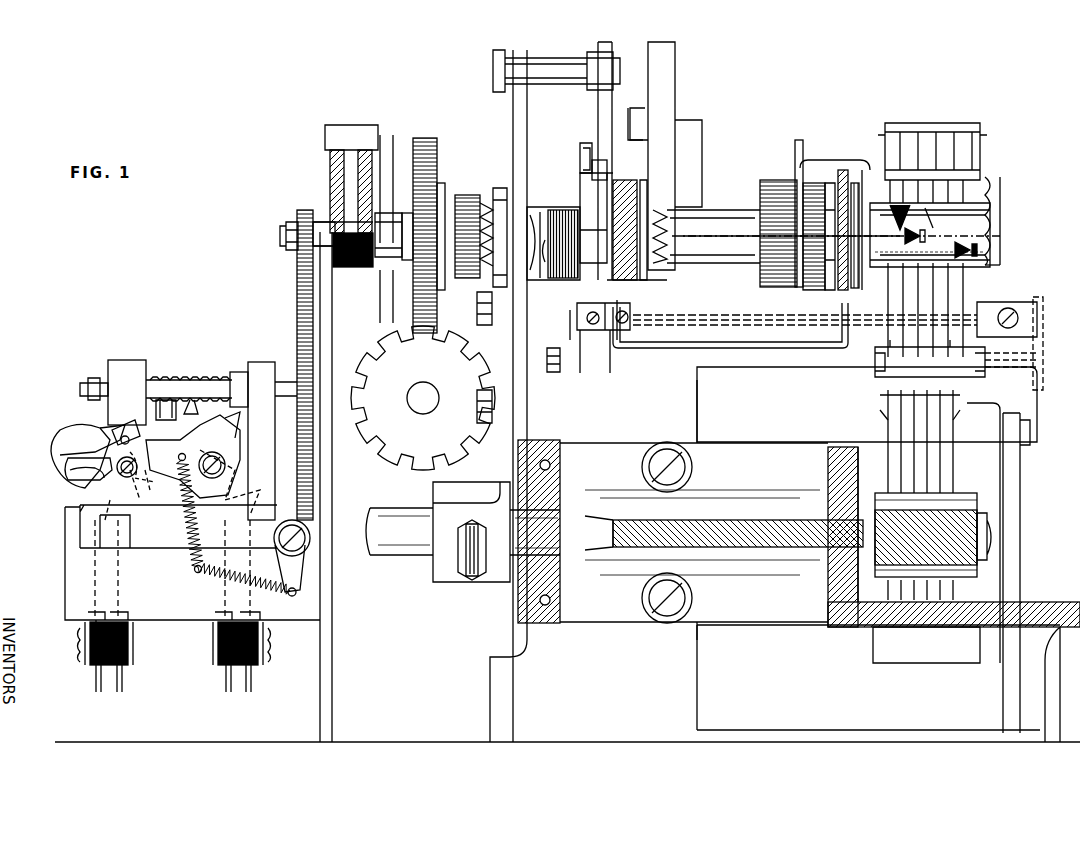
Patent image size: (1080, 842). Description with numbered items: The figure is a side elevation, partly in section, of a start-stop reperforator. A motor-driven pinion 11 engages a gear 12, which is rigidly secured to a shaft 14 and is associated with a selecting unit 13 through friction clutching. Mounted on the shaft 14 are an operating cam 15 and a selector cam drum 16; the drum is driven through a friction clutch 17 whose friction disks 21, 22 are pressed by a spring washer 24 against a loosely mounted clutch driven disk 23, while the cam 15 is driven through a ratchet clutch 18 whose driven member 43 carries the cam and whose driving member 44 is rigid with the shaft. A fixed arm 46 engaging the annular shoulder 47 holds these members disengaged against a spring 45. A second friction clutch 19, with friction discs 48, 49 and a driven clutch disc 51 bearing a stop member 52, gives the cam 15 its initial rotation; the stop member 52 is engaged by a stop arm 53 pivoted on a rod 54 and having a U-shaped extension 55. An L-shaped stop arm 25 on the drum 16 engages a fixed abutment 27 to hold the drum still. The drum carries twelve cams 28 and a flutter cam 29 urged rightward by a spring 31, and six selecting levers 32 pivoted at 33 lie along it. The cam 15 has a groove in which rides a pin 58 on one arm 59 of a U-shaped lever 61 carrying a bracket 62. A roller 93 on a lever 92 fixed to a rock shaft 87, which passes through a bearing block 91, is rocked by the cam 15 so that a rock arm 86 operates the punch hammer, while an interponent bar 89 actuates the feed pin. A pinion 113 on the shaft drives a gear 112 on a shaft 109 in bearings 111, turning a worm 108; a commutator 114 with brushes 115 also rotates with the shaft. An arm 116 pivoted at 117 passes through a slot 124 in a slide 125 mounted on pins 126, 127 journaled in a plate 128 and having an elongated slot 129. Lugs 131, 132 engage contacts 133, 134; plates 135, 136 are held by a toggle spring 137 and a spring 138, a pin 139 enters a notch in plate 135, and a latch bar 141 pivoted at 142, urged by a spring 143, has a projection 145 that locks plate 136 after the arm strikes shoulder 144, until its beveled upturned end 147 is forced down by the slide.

The pinion 11 is at (383, 455).
The gear 12 is at (428, 150).
The selecting unit 13 is at (1012, 222).
The shaft 14 is at (746, 232).
The operating cam 15 is at (586, 165).
The selector cam drum 16 is at (980, 240).
The friction clutch 17 is at (863, 168).
The ratchet clutch 18 is at (490, 198).
The second friction clutch 19 is at (623, 167).
The friction disk 21 is at (830, 212).
The friction disk 22 is at (857, 183).
The clutch driven disk 23 is at (846, 228).
The spring washer 24 is at (812, 210).
The L-shaped stop arm 25 is at (876, 180).
The fixed abutment 27 is at (806, 180).
The cams 28 is at (926, 243).
The flutter cam 29 is at (995, 207).
The spring 31 is at (960, 290).
The selecting levers 32 is at (900, 212).
The pivot pin 33 is at (1025, 360).
The driven clutch member 43 is at (535, 232).
The driving clutch member 44 is at (479, 200).
The spring 45 is at (550, 276).
The fixed arm 46 is at (533, 278).
The annular shoulder 47 is at (558, 288).
The friction disc 48 is at (606, 180).
The friction disc 49 is at (630, 185).
The driven clutch disc 51 is at (640, 200).
The stop member 52 is at (655, 212).
The stop arm 53 is at (626, 312).
The rod 54 is at (724, 318).
The U-shaped extension 55 is at (776, 344).
The pin 58 is at (590, 215).
The lever arm 59 is at (555, 338).
The U-shaped lever 61 is at (742, 383).
The U-shaped bracket 62 is at (877, 362).
The rock arm 86 is at (950, 520).
The rock shaft 87 is at (378, 538).
The interponent bar 89 is at (925, 445).
The bearing block 91 is at (530, 625).
The lever 92 is at (505, 458).
The roller 93 is at (590, 187).
The worm 108 is at (210, 378).
The worm shaft 109 is at (289, 362).
The bearings 111 is at (132, 364).
The gear 112 is at (298, 290).
The pinion 113 is at (293, 224).
The commutator 114 is at (333, 222).
The brushes 115 is at (333, 200).
The arm 116 is at (194, 382).
The pivot 117 is at (228, 380).
The slot 124 is at (166, 380).
The slide 125 is at (82, 432).
The pin 126 is at (72, 466).
The pin 127 is at (226, 467).
The plate 128 is at (62, 565).
The elongated slot 129 is at (72, 474).
The lug 131 is at (140, 500).
The lug 132 is at (243, 496).
The contacts 133 is at (98, 560).
The contacts 134 is at (248, 558).
The plate 135 is at (60, 452).
The plate 136 is at (224, 448).
The toggle spring 137 is at (117, 488).
The spring 138 is at (192, 562).
The pin 139 is at (126, 436).
The latch bar 141 is at (84, 549).
The pivot 142 is at (310, 543).
The spring 143 is at (292, 596).
The shoulder 144 is at (233, 420).
The projection 145 is at (222, 580).
The beveled upturned end 147 is at (84, 512).